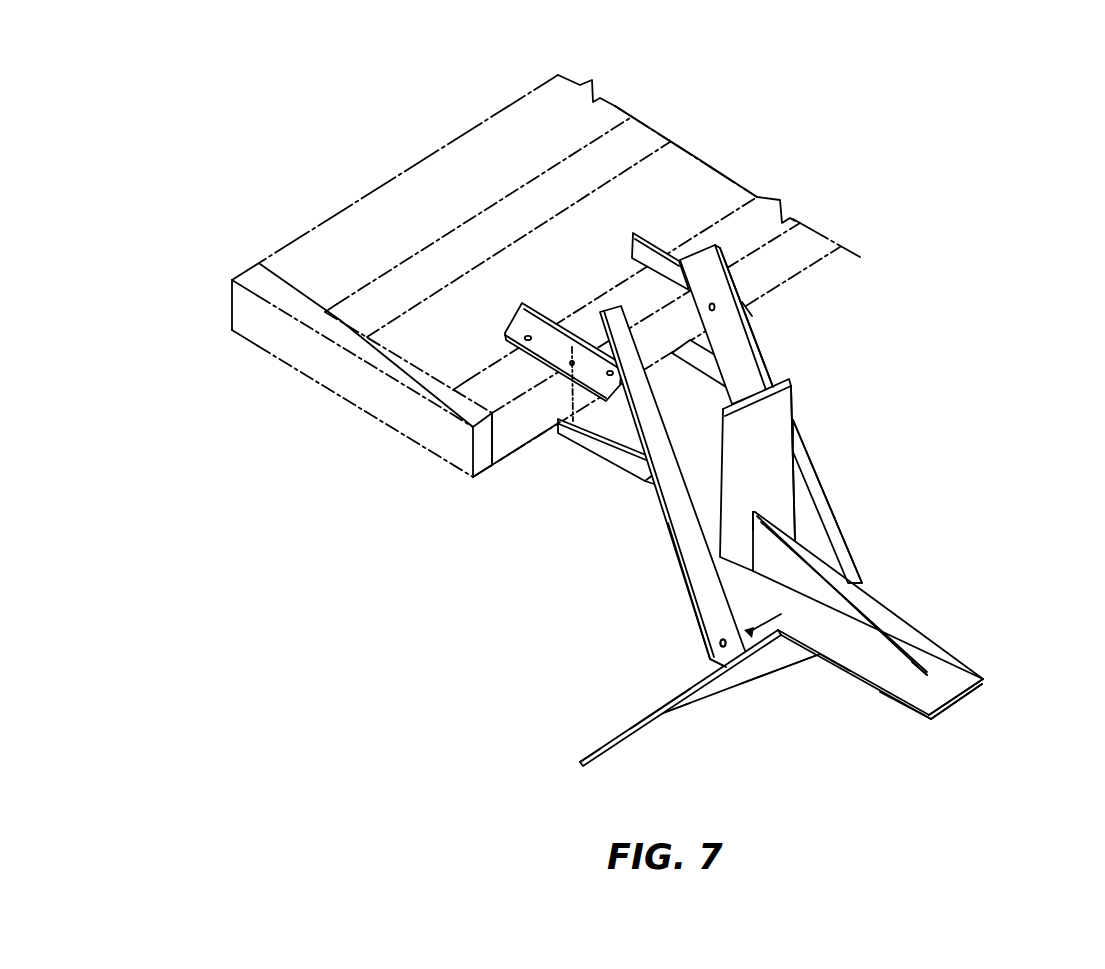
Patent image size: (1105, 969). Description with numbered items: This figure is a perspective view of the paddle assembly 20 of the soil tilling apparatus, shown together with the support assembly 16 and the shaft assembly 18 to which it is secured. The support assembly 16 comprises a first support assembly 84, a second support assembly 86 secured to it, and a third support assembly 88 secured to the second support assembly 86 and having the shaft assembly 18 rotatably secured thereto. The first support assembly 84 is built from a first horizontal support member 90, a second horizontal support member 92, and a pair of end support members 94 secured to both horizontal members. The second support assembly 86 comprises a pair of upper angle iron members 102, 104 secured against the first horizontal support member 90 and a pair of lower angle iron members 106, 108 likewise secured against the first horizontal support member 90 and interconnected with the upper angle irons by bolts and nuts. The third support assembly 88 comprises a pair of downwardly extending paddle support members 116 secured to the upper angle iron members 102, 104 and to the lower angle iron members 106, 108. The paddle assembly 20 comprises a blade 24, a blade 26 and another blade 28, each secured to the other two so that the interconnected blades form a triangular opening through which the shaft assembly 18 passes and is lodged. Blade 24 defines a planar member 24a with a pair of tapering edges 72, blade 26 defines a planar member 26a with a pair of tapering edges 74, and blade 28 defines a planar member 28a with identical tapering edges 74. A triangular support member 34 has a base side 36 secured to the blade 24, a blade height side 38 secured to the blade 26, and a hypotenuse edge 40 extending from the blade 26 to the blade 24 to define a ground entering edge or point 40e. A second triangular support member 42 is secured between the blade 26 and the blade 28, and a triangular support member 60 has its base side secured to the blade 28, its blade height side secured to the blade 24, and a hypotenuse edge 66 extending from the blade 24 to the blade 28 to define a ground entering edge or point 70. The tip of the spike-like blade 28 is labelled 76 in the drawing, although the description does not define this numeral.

The support assembly 16 is at (673, 100).
The first support assembly 84 is at (729, 116).
The second horizontal support member 92 is at (349, 206).
The end support member 94 is at (369, 410).
The upper angle iron member 102 is at (520, 322).
The upper angle iron member 104 is at (642, 253).
The lower angle iron member 106 is at (600, 437).
The lower angle iron member 108 is at (692, 364).
The tapering edges 74 is at (662, 526).
The downwardly extending paddle support member 116 is at (685, 553).
The third support assembly 88 is at (764, 359).
The second support assembly 86 is at (542, 476).
The first horizontal support member 90 is at (504, 460).
The blade 26 is at (776, 448).
The planar member 26a is at (796, 462).
The blade height side 38 is at (752, 522).
The triangular support member 34 is at (797, 573).
The blade 24 is at (813, 634).
The planar member 24a is at (990, 676).
The hypotenuse edge 40 is at (893, 609).
The ground entering edge or point 40e is at (958, 650).
The tapering edges 72 is at (987, 682).
The base side 36 is at (850, 648).
The hypotenuse edge 66 is at (770, 678).
The triangular support member 60 is at (727, 684).
The ground entering edge or point 70 is at (658, 718).
The blade 28 is at (607, 748).
The planar member 28a is at (658, 710).
The spike tip 76 is at (584, 758).
The triangular support member 42 is at (708, 672).
The shaft assembly 18 is at (711, 633).
The paddle assembly 20 is at (872, 568).